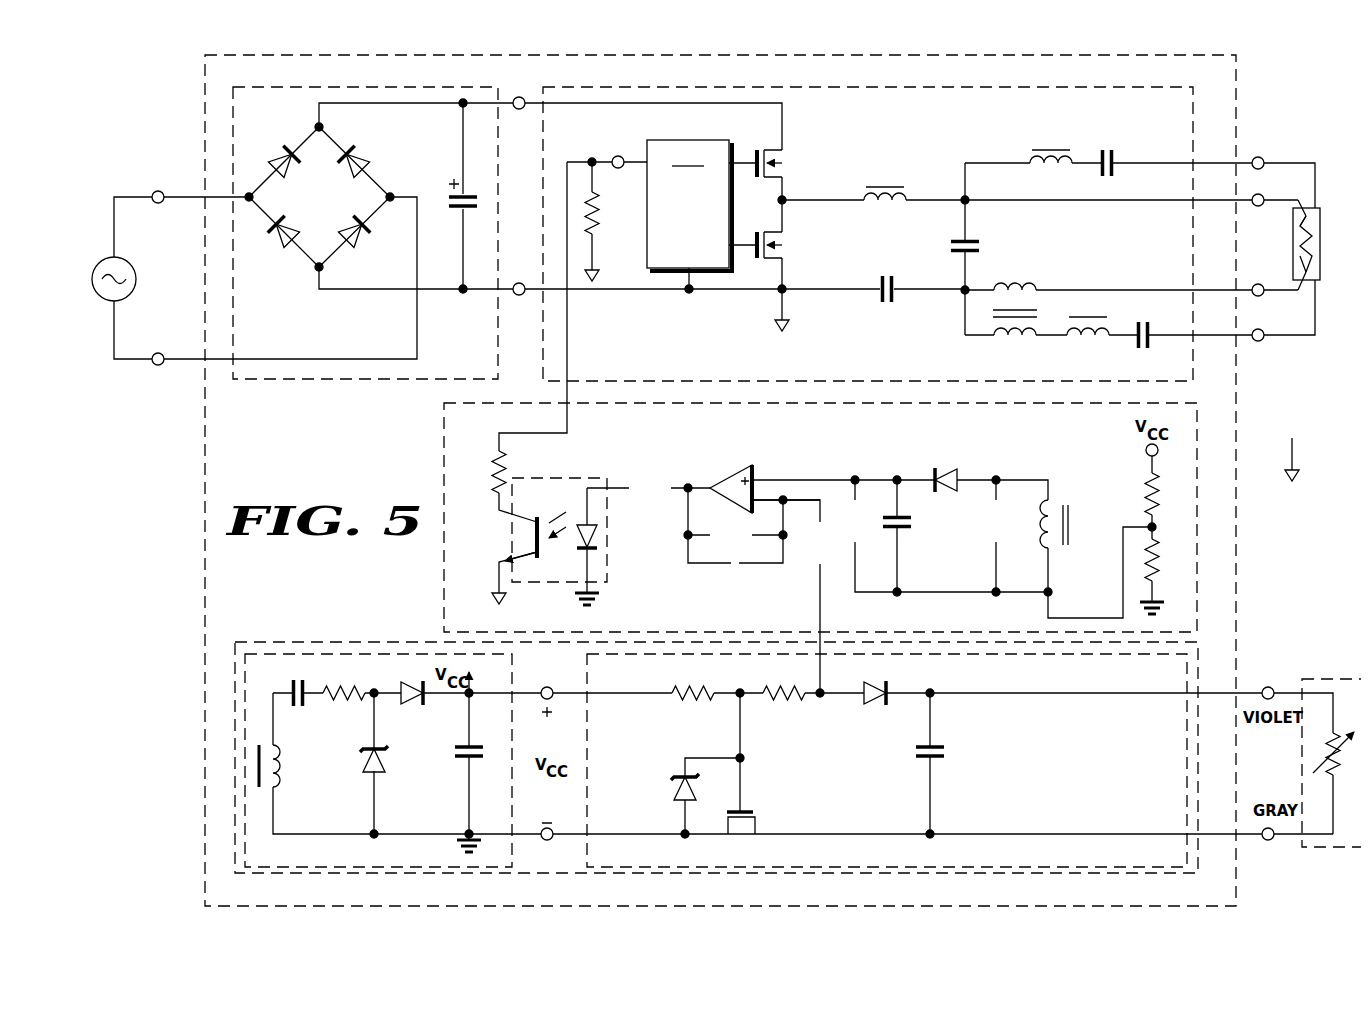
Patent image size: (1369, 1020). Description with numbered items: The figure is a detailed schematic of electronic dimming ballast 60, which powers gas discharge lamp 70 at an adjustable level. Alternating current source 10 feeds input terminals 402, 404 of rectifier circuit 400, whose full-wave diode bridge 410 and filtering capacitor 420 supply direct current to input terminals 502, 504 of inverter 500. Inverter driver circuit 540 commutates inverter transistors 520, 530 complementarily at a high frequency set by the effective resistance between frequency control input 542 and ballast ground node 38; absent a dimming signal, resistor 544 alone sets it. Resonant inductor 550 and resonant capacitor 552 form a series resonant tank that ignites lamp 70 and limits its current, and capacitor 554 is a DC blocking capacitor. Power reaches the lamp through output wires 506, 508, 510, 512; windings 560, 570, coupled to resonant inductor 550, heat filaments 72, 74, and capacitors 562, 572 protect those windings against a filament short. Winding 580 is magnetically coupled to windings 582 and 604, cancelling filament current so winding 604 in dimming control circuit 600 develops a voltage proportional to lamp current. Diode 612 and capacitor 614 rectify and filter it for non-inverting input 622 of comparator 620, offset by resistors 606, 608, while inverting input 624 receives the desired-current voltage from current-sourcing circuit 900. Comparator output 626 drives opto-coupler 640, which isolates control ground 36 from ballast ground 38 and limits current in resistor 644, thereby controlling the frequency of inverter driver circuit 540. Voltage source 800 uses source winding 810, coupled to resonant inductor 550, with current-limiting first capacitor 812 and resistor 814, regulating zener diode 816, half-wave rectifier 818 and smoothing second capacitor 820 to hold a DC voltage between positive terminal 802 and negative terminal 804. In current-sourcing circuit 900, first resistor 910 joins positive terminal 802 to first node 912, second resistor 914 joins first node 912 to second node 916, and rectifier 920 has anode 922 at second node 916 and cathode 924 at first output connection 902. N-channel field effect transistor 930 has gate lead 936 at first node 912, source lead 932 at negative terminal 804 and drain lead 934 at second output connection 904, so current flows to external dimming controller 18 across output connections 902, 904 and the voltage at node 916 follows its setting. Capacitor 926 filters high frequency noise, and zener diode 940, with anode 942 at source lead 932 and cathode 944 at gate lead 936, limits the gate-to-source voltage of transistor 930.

The source of alternating current 10 is at (108, 259).
The external dimming controller 18 is at (1330, 679).
The control ground 36 is at (575, 594).
The ballast ground node 38 is at (595, 260).
The electronic ballast 60 is at (1232, 93).
The lamp 70 is at (1320, 247).
The filament 72 is at (1318, 222).
The filament 74 is at (1318, 270).
The rectifier circuit 400 is at (294, 118).
The input terminal 402 is at (156, 190).
The input terminal 404 is at (156, 352).
The full-wave diode bridge 410 is at (335, 208).
The filtering capacitor 420 is at (467, 212).
The inverter 500 is at (898, 118).
The input terminal 502 is at (519, 110).
The input terminal 504 is at (519, 296).
The output wire 506 is at (1258, 157).
The output wire 508 is at (1258, 207).
The output wire 510 is at (1258, 284).
The output wire 512 is at (1258, 342).
The inverter transistor 520 is at (786, 164).
The inverter transistor 530 is at (786, 246).
The inverter driver circuit 540 is at (689, 205).
The frequency control input 542 is at (617, 155).
The resistor 544 is at (596, 210).
The resonant inductor 550 is at (885, 212).
The resonant capacitor 552 is at (958, 254).
The DC blocking capacitor 554 is at (887, 304).
The winding 560 is at (1032, 173).
The capacitor 562 is at (1112, 157).
The winding 570 is at (1088, 348).
The capacitor 572 is at (1150, 350).
The winding 580 is at (1013, 282).
The winding 582 is at (1015, 348).
The dimming control circuit 600 is at (843, 430).
The winding 604 is at (1040, 546).
The resistor 606 is at (1165, 461).
The resistor 608 is at (1165, 528).
The diode 612 is at (940, 468).
The capacitor 614 is at (903, 519).
The comparator 620 is at (722, 469).
The non-inverting input 622 is at (764, 478).
The inverting input 624 is at (774, 498).
The output 626 is at (687, 484).
The opto-coupler 640 is at (546, 478).
The resistor 644 is at (490, 467).
The voltage source 800 is at (282, 683).
The positive terminal 802 is at (547, 687).
The negative terminal 804 is at (547, 841).
The source winding 810 is at (280, 771).
The first capacitor 812 is at (308, 690).
The resistor 814 is at (348, 704).
The zener diode 816 is at (388, 768).
The rectifier 818 is at (398, 689).
The second capacitor 820 is at (458, 748).
The current-sourcing circuit 900 is at (1068, 683).
The first output connection 902 is at (1268, 687).
The second output connection 904 is at (1268, 841).
The first resistor 910 is at (692, 686).
The first node 912 is at (740, 686).
The second resistor 914 is at (783, 686).
The second node 916 is at (821, 701).
The rectifier 920 is at (872, 705).
The anode 922 is at (836, 693).
The cathode 924 is at (908, 693).
The capacitor 926 is at (937, 745).
The transistor 930 is at (741, 828).
The source lead 932 is at (700, 836).
The drain lead 934 is at (780, 836).
The gate lead 936 is at (745, 786).
The zener diode 940 is at (673, 790).
The anode 942 is at (682, 814).
The cathode 944 is at (678, 763).